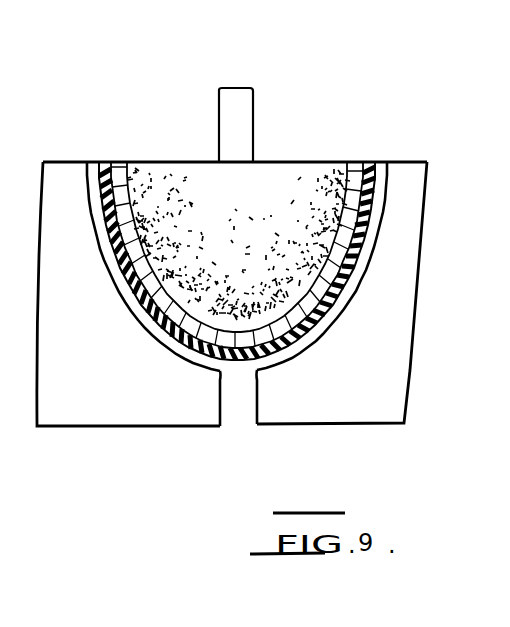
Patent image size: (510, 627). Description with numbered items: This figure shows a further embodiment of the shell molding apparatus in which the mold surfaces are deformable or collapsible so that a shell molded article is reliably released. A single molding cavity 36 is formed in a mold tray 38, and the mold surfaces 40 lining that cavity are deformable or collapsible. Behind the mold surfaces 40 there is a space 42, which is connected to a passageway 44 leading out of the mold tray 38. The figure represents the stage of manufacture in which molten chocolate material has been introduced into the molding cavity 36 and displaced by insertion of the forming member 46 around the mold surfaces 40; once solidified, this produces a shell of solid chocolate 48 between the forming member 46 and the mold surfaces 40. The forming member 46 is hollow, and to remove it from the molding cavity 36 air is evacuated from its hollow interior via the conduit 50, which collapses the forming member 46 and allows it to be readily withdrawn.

The molding cavity 36 is at (170, 152).
The mold tray 38 is at (100, 378).
The mold surfaces 40 is at (362, 272).
The space 42 is at (350, 301).
The passageway 44 is at (238, 377).
The forming member 46 is at (280, 197).
The shell of solid chocolate 48 is at (348, 215).
The conduit 50 is at (246, 118).